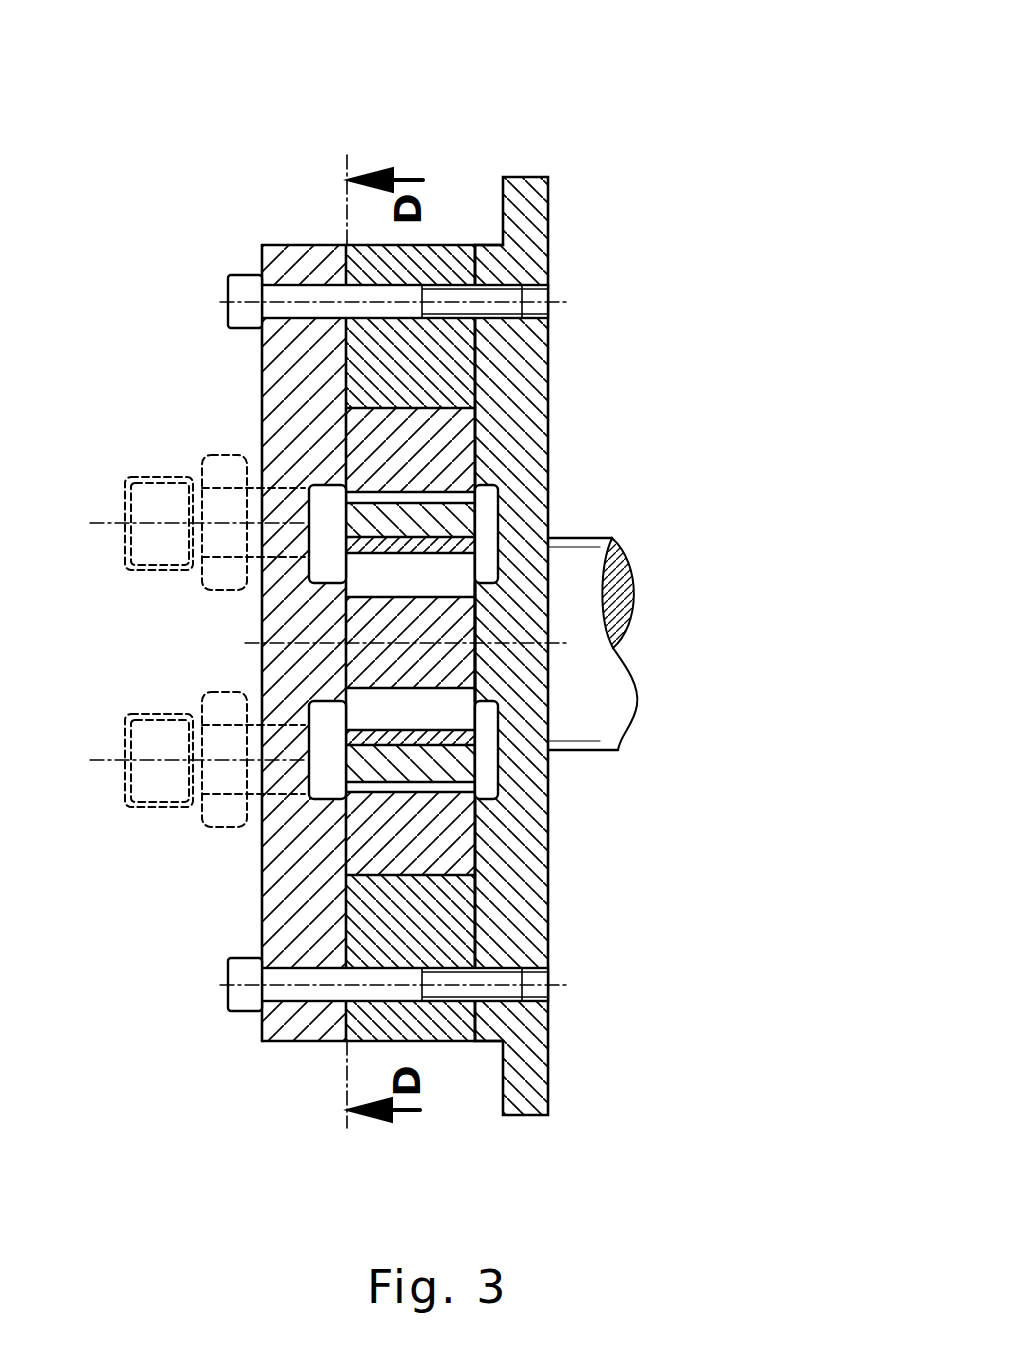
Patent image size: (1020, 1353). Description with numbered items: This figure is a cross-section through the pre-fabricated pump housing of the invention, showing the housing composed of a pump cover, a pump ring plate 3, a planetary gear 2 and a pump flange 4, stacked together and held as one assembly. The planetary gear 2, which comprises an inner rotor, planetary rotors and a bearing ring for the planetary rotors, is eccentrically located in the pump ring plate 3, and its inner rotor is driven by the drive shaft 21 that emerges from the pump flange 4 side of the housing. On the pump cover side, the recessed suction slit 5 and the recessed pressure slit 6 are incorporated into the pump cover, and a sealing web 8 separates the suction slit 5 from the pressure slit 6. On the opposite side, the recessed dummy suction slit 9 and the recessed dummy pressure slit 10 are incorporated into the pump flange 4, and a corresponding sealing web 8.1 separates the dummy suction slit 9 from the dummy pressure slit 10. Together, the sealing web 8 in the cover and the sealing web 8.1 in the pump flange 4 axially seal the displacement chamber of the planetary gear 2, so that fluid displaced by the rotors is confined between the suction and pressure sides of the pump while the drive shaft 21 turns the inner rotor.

The planetary gear 2 is at (400, 535).
The pump ring plate 3 is at (455, 265).
The pump flange 4 is at (530, 203).
The suction slit 5 is at (330, 507).
The pressure slit 6 is at (326, 748).
The sealing web 8 is at (323, 613).
The sealing web 8.1 is at (492, 622).
The dummy suction slit 9 is at (485, 512).
The dummy pressure slit 10 is at (487, 748).
The drive shaft 21 is at (615, 570).